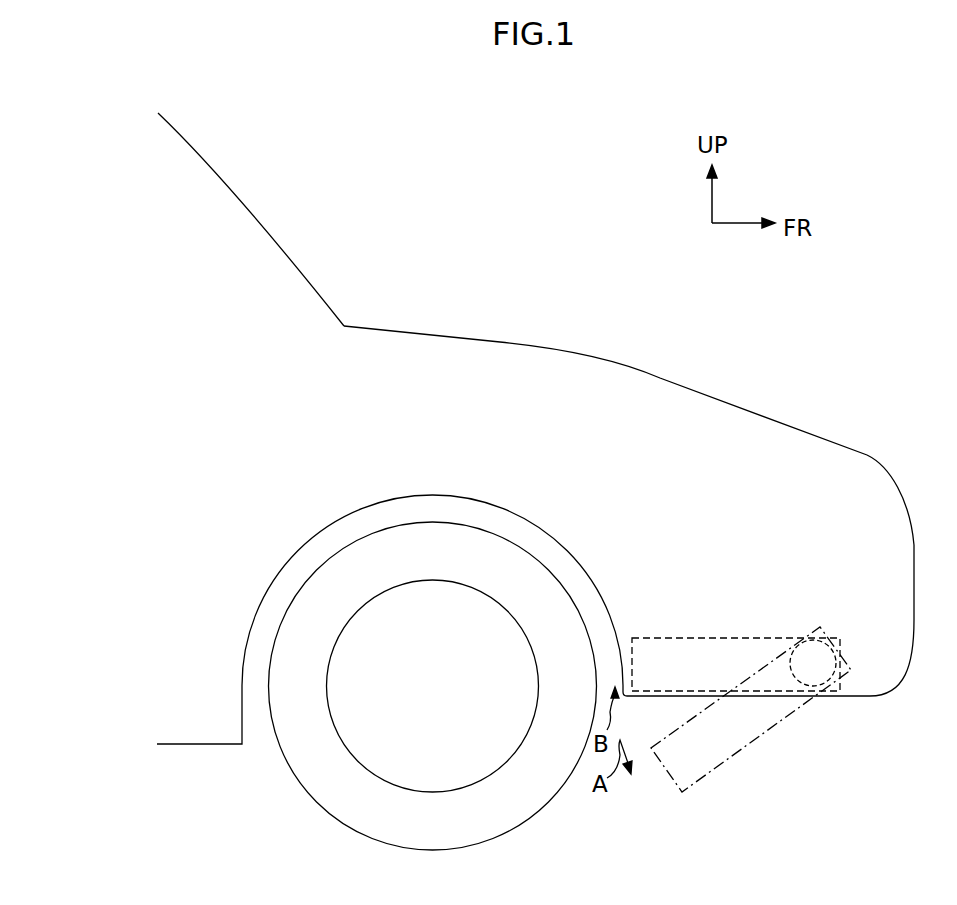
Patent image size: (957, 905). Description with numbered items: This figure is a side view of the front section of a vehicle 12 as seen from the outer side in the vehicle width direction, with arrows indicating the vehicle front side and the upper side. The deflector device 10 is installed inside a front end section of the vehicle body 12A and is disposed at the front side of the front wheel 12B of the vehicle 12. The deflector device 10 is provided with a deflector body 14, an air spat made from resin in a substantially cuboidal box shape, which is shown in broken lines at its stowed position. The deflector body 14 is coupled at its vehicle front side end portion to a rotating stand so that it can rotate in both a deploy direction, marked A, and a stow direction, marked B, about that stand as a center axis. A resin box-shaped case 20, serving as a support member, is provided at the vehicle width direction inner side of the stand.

The deflector device 10 is at (695, 638).
The vehicle 12 is at (535, 481).
The vehicle body 12A is at (540, 347).
The front wheel 12B is at (293, 773).
The deflector body 14 is at (728, 637).
The case 20 is at (828, 635).